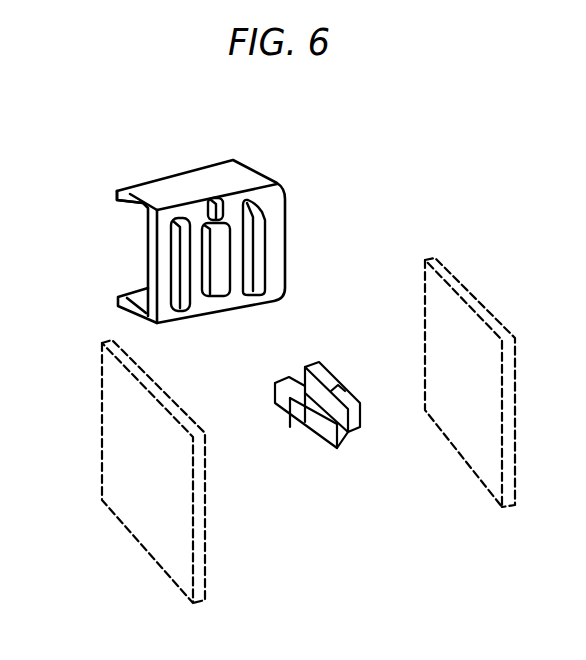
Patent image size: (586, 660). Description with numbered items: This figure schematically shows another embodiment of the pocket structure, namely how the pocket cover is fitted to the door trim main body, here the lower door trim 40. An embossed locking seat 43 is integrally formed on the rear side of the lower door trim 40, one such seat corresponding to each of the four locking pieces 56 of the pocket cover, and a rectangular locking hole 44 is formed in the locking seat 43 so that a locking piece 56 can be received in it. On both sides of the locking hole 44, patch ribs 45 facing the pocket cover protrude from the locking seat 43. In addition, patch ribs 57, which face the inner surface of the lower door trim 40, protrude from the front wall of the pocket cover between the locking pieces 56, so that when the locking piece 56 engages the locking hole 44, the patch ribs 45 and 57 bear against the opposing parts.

The lower door trim 40 is at (344, 181).
The locking seat 43 is at (117, 201).
The locking hole 44 is at (213, 279).
The patch rib 45 is at (176, 259).
The locking piece 56 is at (315, 436).
The patch rib 57 is at (163, 521).